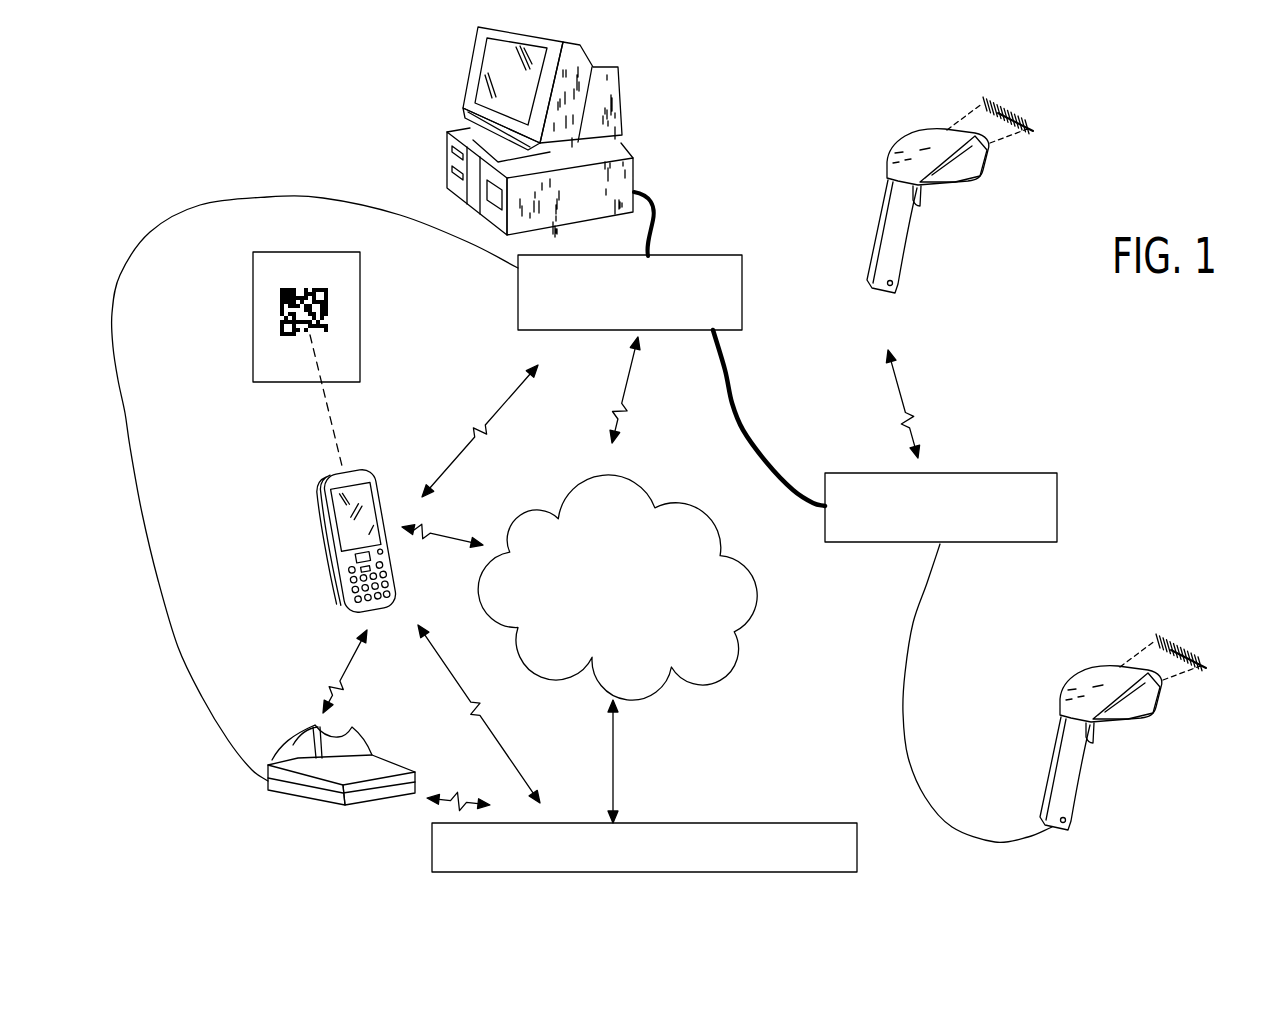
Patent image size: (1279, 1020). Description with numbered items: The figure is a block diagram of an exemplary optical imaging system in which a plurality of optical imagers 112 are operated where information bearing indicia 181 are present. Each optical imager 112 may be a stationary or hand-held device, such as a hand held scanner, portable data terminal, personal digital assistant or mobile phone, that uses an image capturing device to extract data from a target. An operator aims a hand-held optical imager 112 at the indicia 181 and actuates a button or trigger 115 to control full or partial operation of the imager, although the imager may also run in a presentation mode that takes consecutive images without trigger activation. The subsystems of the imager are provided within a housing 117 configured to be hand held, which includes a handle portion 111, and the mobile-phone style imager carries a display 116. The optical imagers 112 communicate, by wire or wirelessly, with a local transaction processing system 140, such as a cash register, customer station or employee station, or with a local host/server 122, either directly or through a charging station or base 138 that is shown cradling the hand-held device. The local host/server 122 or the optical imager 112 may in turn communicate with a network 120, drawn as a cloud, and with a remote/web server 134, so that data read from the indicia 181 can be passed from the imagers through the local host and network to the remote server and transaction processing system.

The handle portion 111 is at (893, 253).
The optical imager 112 is at (711, 459).
The trigger 115 is at (370, 573).
The display 116 is at (333, 491).
The housing 117 is at (1078, 677).
The network 120 is at (725, 662).
The local host/server 122 is at (700, 252).
The remote/web server 134 is at (817, 822).
The charging station or base 138 is at (330, 805).
The local transaction processing system 140 is at (632, 163).
The decodable indicia / bar code 181 is at (360, 318).